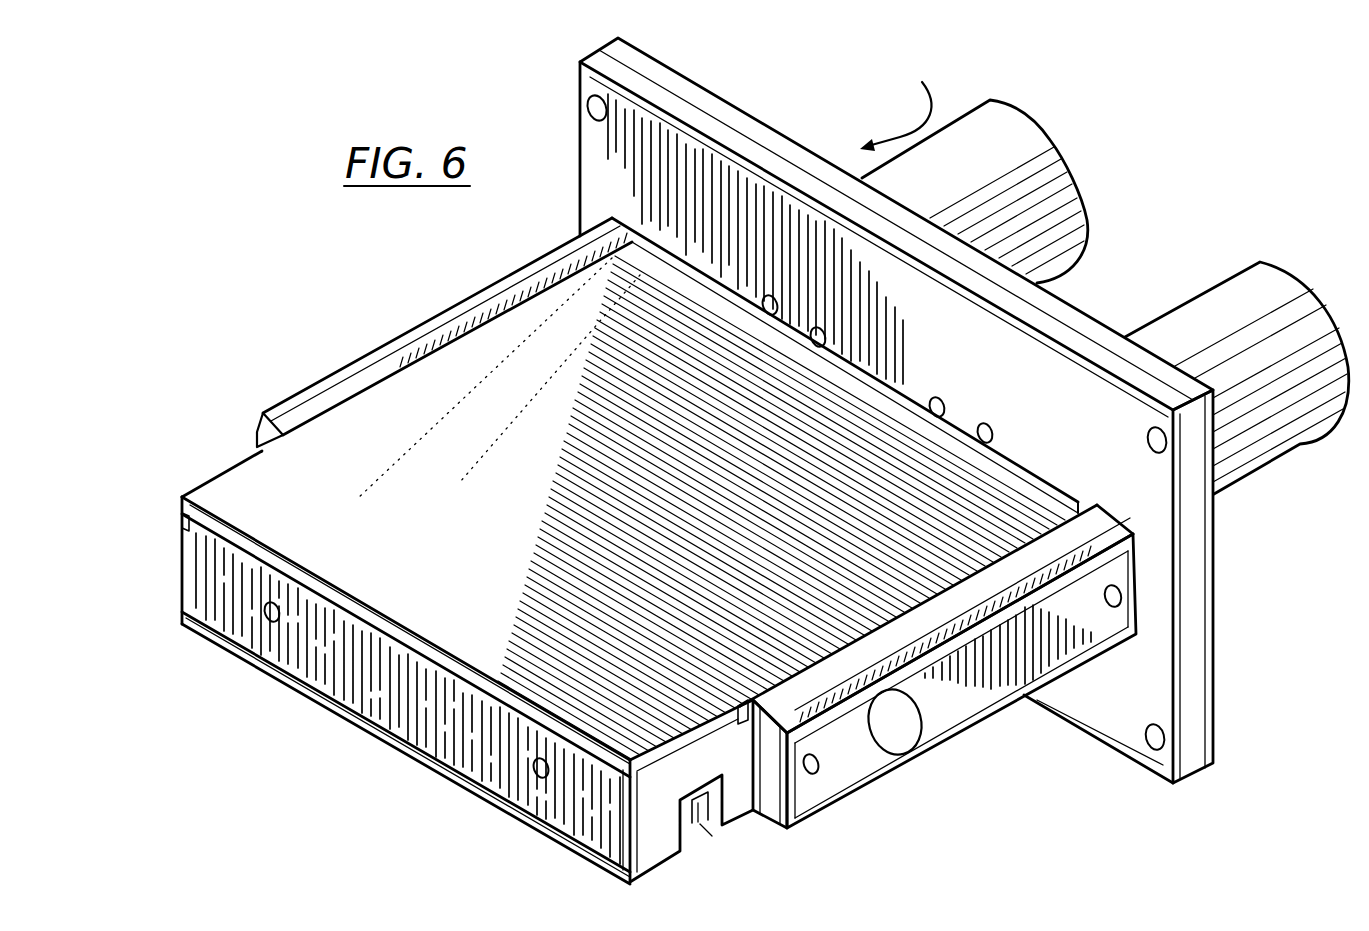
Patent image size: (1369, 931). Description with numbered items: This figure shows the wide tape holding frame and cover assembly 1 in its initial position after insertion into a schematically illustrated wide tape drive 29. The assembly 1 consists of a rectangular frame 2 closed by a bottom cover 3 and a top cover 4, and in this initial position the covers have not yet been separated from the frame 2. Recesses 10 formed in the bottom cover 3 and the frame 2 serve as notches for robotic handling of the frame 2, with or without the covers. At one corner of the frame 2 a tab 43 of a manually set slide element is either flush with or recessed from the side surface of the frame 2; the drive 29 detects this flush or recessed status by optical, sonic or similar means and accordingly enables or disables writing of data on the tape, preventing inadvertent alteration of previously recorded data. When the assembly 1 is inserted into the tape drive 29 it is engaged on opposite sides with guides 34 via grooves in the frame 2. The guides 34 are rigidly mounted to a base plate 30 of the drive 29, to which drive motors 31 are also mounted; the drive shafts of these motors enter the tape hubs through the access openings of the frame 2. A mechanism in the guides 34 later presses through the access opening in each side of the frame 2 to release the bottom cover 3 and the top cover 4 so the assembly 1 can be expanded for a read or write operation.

The wide tape holding frame and cover assembly 1 is at (250, 731).
The frame 2 is at (418, 722).
The bottom cover 3 is at (247, 487).
The top cover 4 is at (225, 651).
The recesses 10 is at (703, 827).
The tape drive 29 is at (895, 102).
The base plate 30 is at (1192, 637).
The drive motors 31 is at (1033, 176).
The guides 34 is at (360, 378).
The tab 43 is at (178, 523).